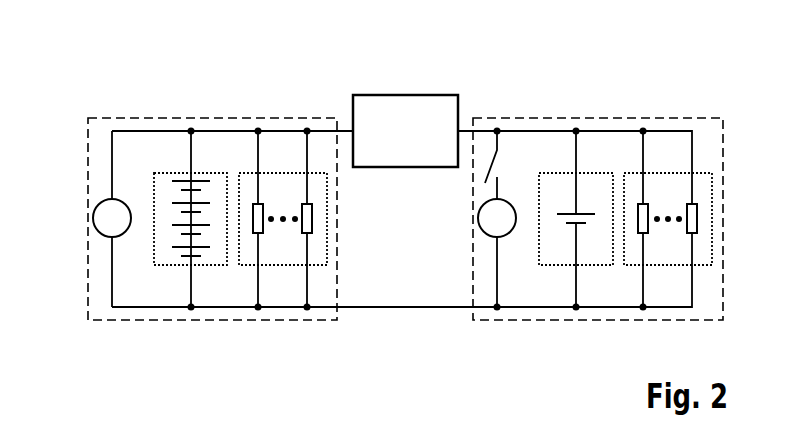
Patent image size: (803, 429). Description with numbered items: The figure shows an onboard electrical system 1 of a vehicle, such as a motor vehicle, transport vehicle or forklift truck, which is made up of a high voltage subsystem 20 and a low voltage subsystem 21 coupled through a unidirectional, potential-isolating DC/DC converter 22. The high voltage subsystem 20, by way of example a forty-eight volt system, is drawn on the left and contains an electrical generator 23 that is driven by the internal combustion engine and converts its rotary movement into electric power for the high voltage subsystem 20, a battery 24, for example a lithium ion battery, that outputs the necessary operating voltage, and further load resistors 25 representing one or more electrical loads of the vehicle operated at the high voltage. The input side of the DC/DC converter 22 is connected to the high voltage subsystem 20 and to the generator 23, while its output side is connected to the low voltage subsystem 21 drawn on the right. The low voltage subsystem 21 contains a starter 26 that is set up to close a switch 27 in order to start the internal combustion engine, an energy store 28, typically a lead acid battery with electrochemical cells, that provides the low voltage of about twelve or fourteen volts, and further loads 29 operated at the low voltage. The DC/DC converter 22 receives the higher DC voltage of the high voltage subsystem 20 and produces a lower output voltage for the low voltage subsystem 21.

The onboard electrical system 1 is at (702, 83).
The high voltage subsystem 20 is at (212, 118).
The low voltage subsystem 21 is at (597, 118).
The DC/DC converter 22 is at (404, 95).
The electrical generator 23 is at (94, 229).
The battery 24 is at (168, 265).
The load resistors 25 is at (248, 265).
The starter 26 is at (479, 229).
The switch 27 is at (494, 165).
The energy store 28 is at (553, 265).
The electrical loads of second subsystem 29 is at (633, 265).